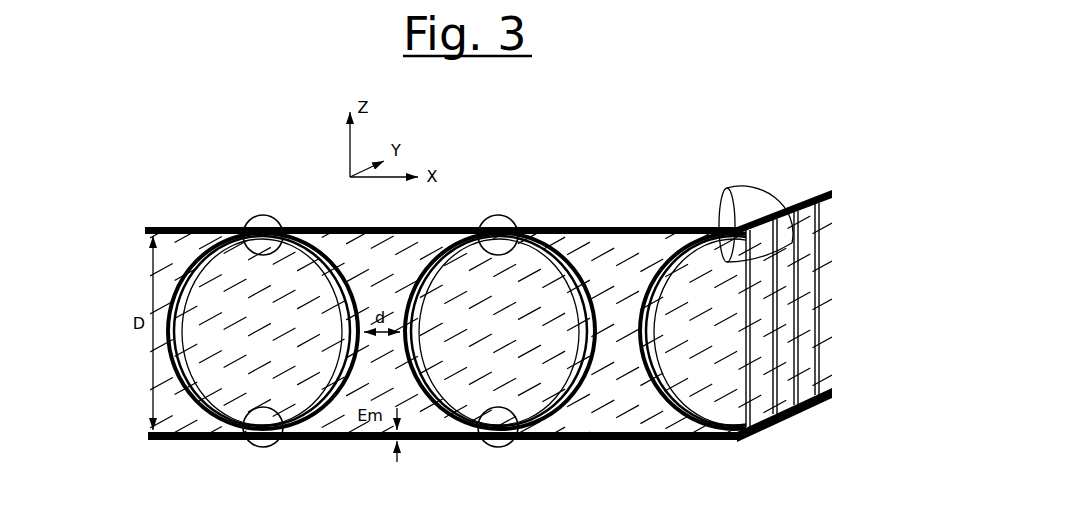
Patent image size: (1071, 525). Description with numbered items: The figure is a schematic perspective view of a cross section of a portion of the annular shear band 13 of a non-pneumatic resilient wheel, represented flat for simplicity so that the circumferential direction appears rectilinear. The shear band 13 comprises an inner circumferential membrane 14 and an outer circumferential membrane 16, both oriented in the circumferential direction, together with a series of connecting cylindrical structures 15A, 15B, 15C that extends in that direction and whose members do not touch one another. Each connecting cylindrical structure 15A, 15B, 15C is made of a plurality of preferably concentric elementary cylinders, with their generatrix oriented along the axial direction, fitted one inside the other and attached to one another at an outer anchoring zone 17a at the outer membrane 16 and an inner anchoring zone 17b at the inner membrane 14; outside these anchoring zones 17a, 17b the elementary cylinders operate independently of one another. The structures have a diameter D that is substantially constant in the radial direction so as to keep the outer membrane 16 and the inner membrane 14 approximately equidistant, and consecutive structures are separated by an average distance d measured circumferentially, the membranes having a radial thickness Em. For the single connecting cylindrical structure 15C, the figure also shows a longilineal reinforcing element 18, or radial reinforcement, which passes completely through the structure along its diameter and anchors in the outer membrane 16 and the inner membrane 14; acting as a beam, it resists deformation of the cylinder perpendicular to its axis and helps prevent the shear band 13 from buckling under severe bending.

The annular shear band 13 is at (572, 196).
The inner circumferential membrane 14 is at (178, 437).
The connecting cylindrical structure 15A is at (200, 420).
The connecting cylindrical structure 15B is at (574, 414).
The connecting cylindrical structure 15C is at (666, 414).
The outer circumferential membrane 16 is at (172, 228).
The outer anchoring zone 17a is at (276, 259).
The inner anchoring zone 17b is at (276, 403).
The longilineal reinforcing element 18 is at (739, 216).